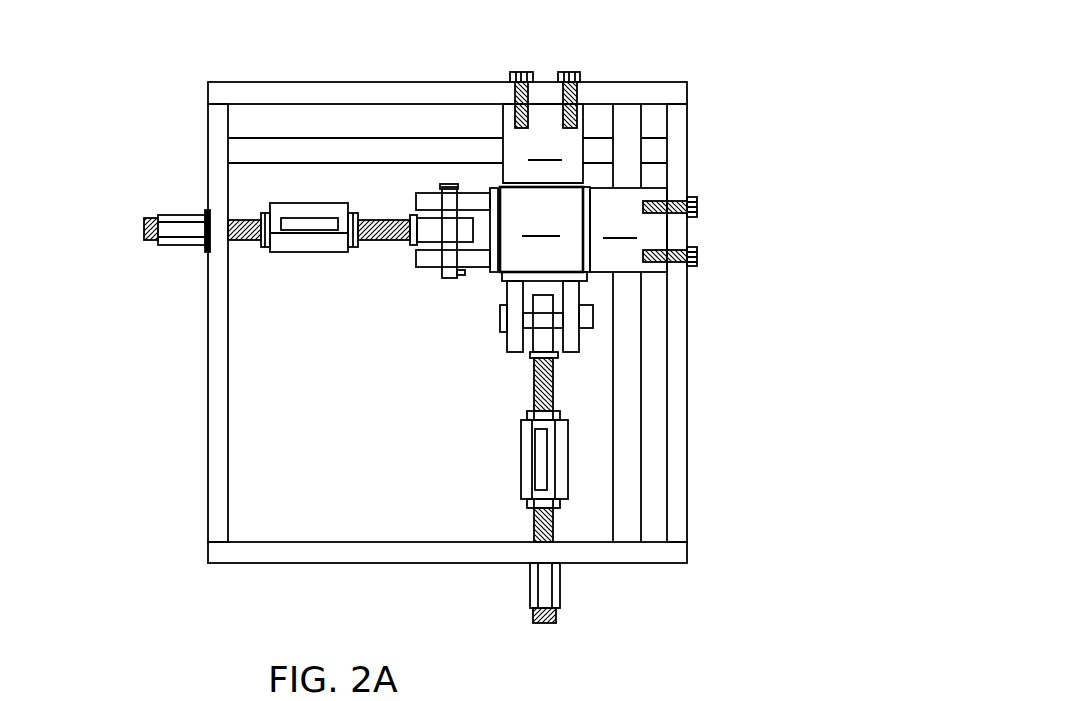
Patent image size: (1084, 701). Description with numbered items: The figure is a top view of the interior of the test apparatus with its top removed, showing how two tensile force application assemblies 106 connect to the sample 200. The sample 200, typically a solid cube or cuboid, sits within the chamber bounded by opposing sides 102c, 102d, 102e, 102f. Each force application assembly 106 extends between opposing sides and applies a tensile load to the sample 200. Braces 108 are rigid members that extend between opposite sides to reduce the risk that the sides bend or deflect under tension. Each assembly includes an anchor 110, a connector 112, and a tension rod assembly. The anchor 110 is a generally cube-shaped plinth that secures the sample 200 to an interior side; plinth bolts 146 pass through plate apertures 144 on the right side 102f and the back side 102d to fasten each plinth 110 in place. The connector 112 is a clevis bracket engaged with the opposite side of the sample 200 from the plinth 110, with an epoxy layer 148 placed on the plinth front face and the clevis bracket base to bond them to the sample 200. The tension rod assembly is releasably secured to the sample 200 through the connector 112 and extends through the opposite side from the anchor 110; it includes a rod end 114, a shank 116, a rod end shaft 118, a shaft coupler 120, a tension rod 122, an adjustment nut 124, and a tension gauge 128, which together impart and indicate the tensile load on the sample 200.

The side 102c is at (260, 548).
The back side 102d is at (270, 90).
The side 102e is at (217, 447).
The right side 102f is at (678, 513).
The tensile force application assembly 106 is at (190, 134).
The brace 108 is at (358, 143).
The anchor 110 is at (585, 188).
The connector 112 is at (448, 188).
The rod end 114 is at (440, 228).
The shank 116 is at (583, 325).
The rod end shaft 118 is at (375, 240).
The shaft coupler 120 is at (287, 250).
The tension rod 122 is at (153, 217).
The adjustment nut 124 is at (172, 245).
The tension gauge 128 is at (300, 228).
The plate aperture 144 is at (516, 100).
The plinth bolt 146 is at (523, 72).
The epoxy layer 148 is at (495, 230).
The sample 200 is at (541, 229).